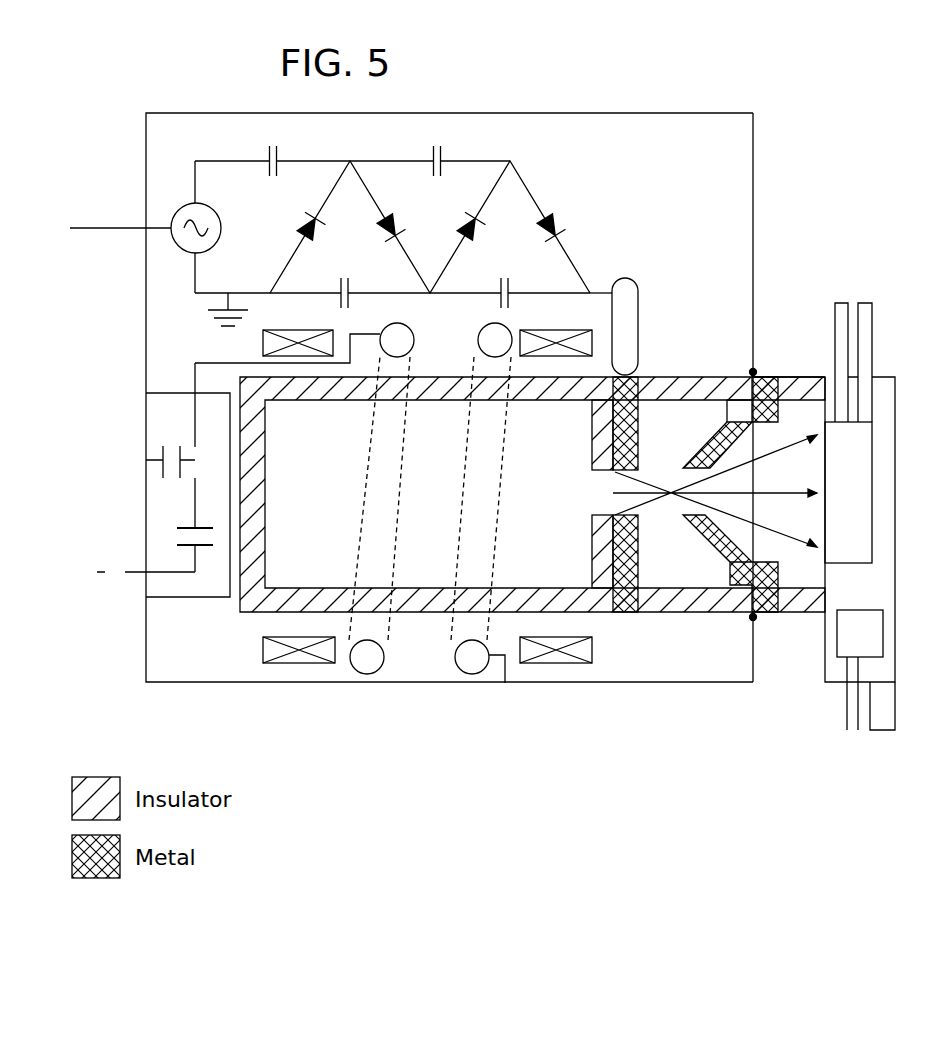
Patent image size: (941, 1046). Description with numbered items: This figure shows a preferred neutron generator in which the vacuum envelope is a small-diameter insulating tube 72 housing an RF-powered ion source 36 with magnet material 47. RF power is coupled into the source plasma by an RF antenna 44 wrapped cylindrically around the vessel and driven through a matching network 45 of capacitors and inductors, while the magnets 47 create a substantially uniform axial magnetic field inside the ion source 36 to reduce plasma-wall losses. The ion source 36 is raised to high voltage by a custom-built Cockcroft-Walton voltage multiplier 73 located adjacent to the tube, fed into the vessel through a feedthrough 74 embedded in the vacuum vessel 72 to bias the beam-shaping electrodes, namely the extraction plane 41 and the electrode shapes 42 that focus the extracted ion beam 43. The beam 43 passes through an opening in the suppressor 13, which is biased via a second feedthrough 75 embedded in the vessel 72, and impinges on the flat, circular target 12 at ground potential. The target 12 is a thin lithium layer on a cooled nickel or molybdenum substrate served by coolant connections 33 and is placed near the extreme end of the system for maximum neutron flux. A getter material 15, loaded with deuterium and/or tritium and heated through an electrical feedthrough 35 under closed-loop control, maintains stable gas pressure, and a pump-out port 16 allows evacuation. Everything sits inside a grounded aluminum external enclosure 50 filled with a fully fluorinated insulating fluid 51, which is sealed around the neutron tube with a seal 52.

The target 12 is at (883, 377).
The suppressor 13 is at (778, 378).
The getter material 15 is at (837, 657).
The pump-out port 16 is at (883, 732).
The coolant connections 33 is at (873, 302).
The electrical feedthrough 35 is at (847, 700).
The ion source 36 is at (305, 570).
The extraction plane 41 is at (598, 518).
The electrode shapes 42 is at (642, 612).
The ion beam 43 is at (732, 612).
The RF antenna 44 is at (352, 668).
The matching network 45 is at (177, 583).
The magnets 47 is at (532, 357).
The external enclosure 50 is at (598, 113).
The insulating fluid 51 is at (685, 160).
The seal 52 is at (754, 370).
The vacuum vessel 72 is at (242, 605).
The Cockcroft-Walton voltage multiplier 73 is at (469, 183).
The feedthrough 74 is at (638, 332).
The feedthrough 75 is at (770, 378).